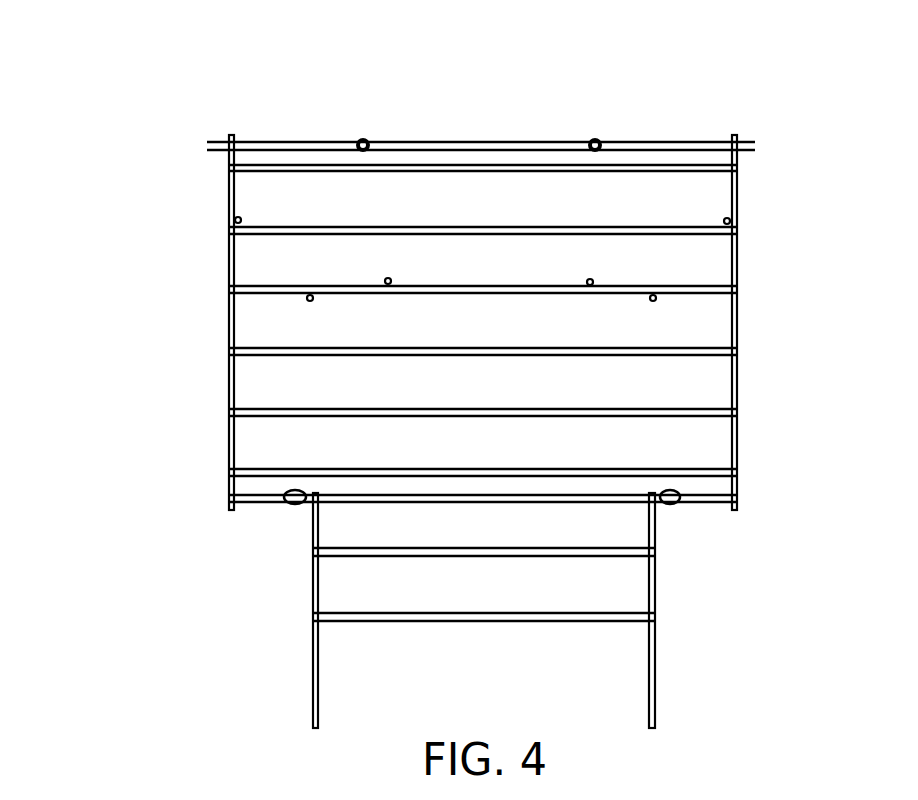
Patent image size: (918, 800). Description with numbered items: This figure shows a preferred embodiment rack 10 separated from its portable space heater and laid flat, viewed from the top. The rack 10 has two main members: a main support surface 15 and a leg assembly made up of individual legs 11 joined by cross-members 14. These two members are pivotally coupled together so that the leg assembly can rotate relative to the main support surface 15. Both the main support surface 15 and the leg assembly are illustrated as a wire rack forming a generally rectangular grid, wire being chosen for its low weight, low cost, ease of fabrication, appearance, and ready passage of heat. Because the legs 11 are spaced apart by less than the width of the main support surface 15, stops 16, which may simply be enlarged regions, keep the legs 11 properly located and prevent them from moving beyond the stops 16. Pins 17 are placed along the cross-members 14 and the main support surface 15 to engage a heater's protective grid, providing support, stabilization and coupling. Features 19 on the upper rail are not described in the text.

The rack 10 is at (205, 83).
The legs 11 is at (526, 610).
The cross-members 14 is at (456, 622).
The main support surface 15 is at (738, 380).
The stops 16 is at (291, 505).
The pins 17 is at (732, 220).
The top rail eyelets 19 is at (362, 139).